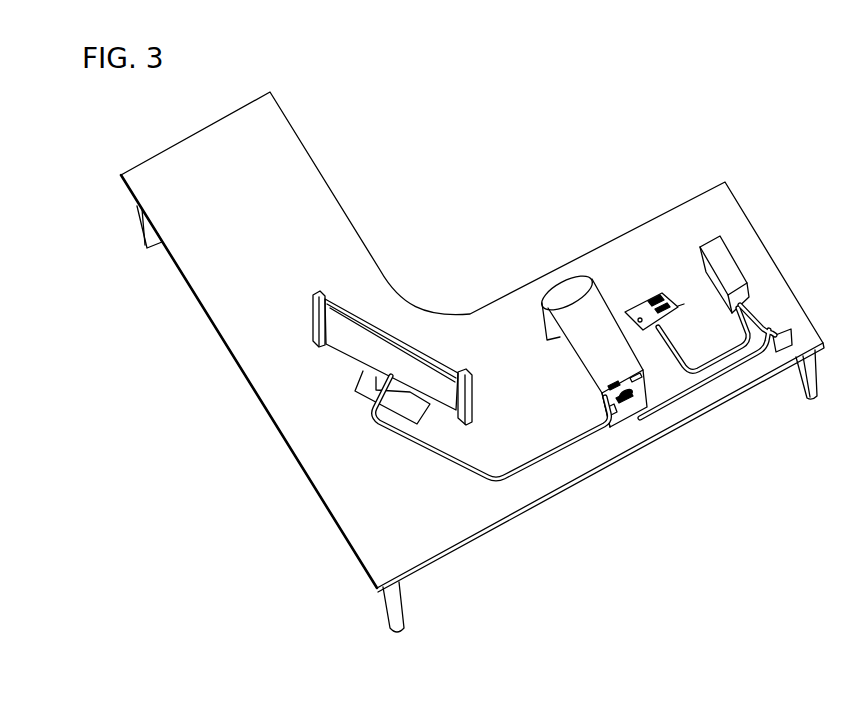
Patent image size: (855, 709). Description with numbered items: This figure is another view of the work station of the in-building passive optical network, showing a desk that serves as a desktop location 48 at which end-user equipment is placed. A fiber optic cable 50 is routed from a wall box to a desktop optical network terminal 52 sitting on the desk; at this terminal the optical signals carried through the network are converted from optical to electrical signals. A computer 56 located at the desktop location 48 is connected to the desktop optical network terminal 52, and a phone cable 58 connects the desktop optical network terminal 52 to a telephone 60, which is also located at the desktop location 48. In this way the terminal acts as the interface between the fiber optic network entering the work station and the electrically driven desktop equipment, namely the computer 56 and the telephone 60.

The desktop location 48 is at (440, 298).
The fiber optic cable 50 is at (767, 325).
The desktop optical network terminal 52 is at (725, 248).
The computer 56 is at (568, 306).
The phone cable 58 is at (707, 362).
The telephone 60 is at (640, 306).